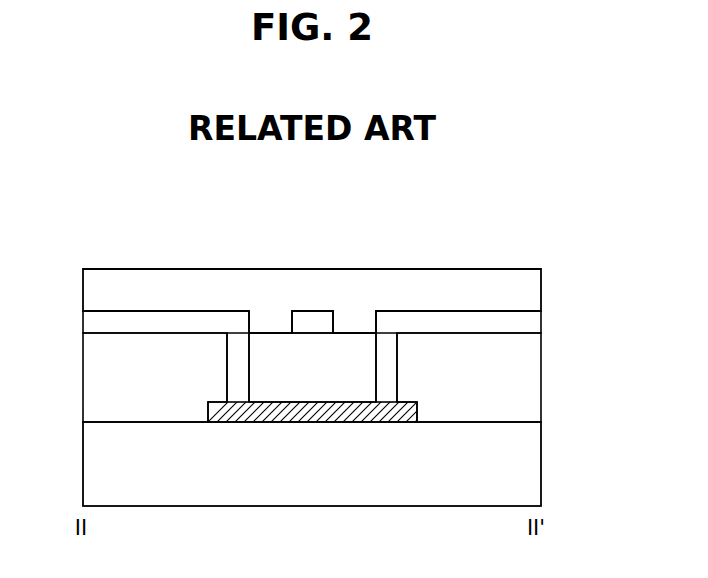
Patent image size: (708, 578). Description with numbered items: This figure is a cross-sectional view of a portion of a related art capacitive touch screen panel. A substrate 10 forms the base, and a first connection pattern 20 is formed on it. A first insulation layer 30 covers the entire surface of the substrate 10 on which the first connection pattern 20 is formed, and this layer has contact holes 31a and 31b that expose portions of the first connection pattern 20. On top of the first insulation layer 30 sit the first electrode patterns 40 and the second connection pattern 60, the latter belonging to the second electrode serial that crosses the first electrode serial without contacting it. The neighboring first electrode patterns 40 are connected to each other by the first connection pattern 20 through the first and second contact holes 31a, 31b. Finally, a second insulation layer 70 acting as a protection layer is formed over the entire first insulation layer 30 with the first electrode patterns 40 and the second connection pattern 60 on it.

The substrate 10 is at (531, 467).
The first connection pattern 20 is at (313, 413).
The first insulation layer 30 is at (531, 370).
The first contact hole 31a is at (227, 350).
The second contact hole 31b is at (377, 350).
The first electrode pattern 40 is at (531, 321).
The second connection pattern 60 is at (312, 318).
The second insulation layer 70 is at (531, 290).